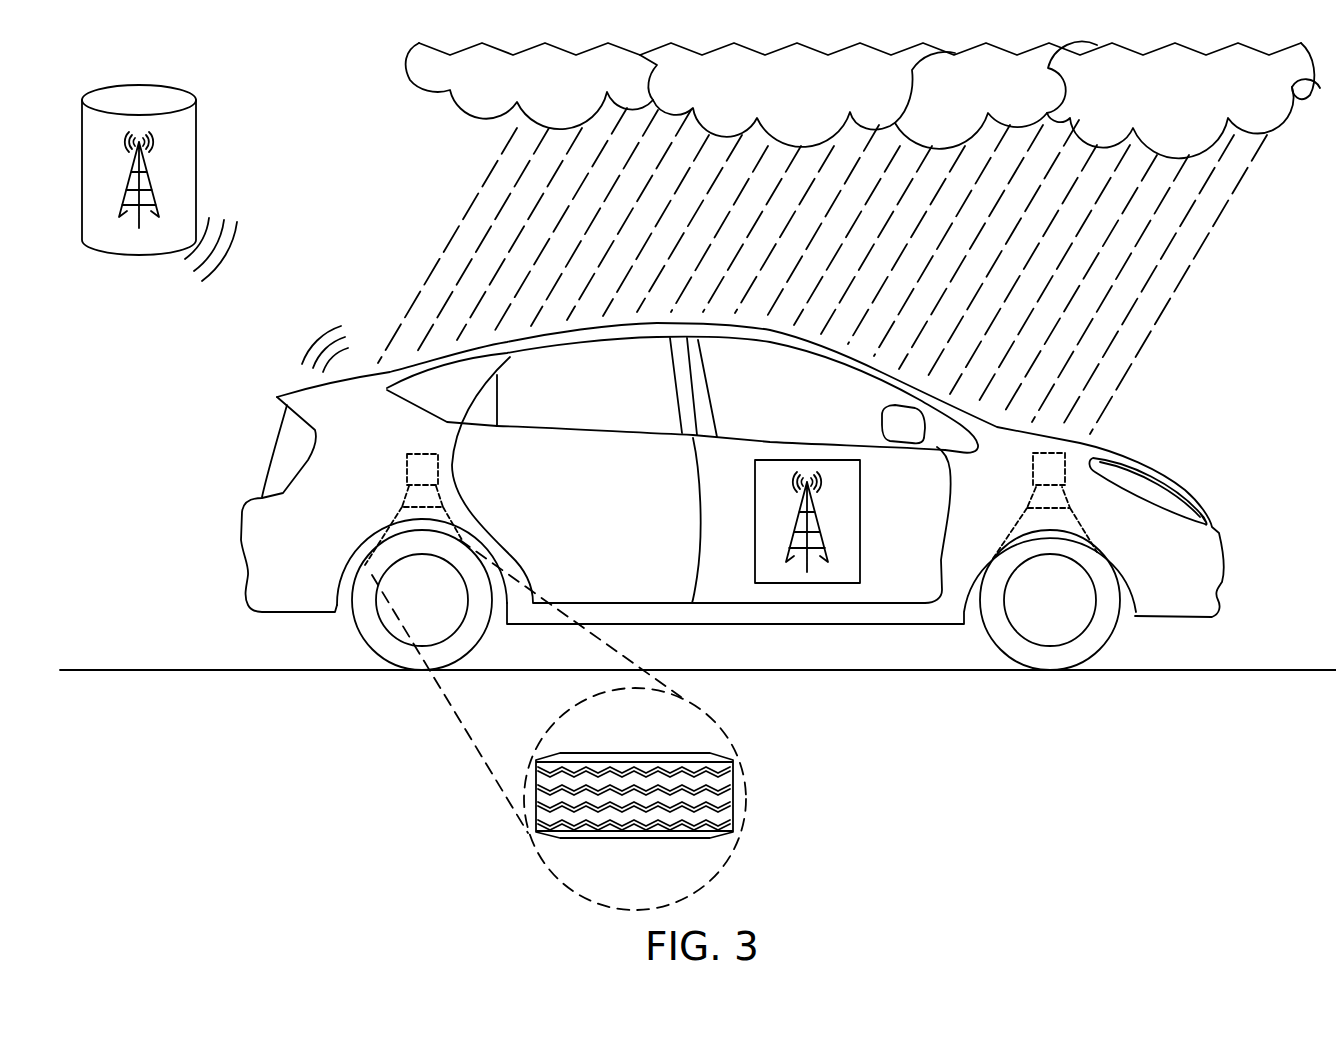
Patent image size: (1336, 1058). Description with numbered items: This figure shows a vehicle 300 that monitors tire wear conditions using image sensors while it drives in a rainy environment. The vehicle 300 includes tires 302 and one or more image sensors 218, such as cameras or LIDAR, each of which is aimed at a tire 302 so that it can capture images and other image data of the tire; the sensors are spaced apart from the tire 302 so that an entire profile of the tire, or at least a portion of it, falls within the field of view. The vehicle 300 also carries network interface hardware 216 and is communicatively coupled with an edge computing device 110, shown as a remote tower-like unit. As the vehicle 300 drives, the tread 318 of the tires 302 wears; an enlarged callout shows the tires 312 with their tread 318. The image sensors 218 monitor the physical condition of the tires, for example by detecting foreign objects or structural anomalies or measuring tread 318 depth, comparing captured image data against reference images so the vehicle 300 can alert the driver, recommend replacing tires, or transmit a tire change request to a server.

The edge computing device 110 is at (197, 110).
The network interface hardware 216 is at (860, 520).
The image sensors 218 is at (407, 469).
The vehicle 300 is at (1252, 279).
The tires 302 is at (366, 636).
The tires 312 is at (670, 766).
The tread 318 is at (735, 803).